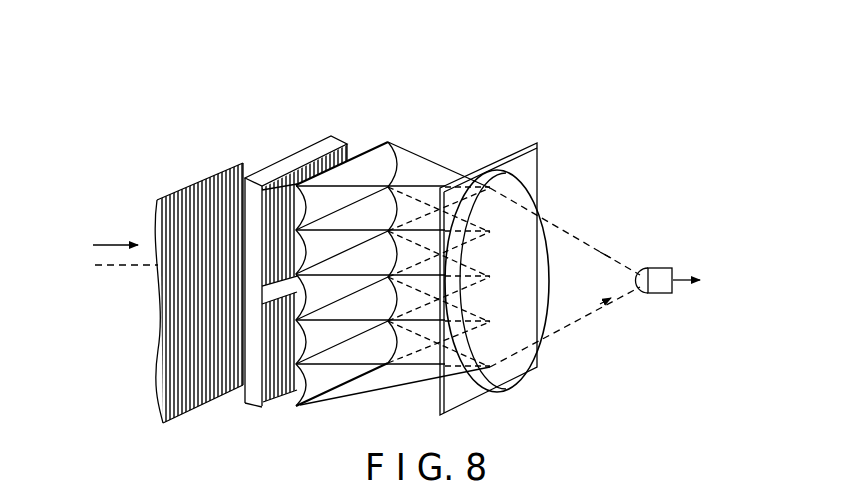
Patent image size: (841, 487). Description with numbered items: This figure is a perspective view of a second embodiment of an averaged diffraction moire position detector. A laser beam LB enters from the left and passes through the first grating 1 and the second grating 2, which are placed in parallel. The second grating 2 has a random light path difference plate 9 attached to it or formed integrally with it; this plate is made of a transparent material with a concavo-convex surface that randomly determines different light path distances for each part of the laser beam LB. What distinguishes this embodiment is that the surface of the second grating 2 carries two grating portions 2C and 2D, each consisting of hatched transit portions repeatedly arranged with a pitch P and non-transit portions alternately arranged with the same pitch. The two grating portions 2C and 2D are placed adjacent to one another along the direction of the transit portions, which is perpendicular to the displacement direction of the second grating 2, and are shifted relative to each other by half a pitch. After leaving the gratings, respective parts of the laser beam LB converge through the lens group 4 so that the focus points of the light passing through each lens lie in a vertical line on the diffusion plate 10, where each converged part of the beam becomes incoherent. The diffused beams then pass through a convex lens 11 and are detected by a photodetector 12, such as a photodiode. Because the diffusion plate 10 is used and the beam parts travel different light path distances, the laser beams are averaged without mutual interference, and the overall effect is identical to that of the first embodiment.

The first grating 1 is at (244, 162).
The second grating 2 is at (299, 241).
The grating portion 2C is at (256, 208).
The grating portion 2D is at (277, 402).
The lens group 4 is at (377, 142).
The random light path difference plate 9 is at (295, 155).
The diffusion plate 10 is at (442, 187).
The convex lens 11 is at (517, 192).
The photodetector 12 is at (657, 272).
The laser beam LB is at (118, 267).